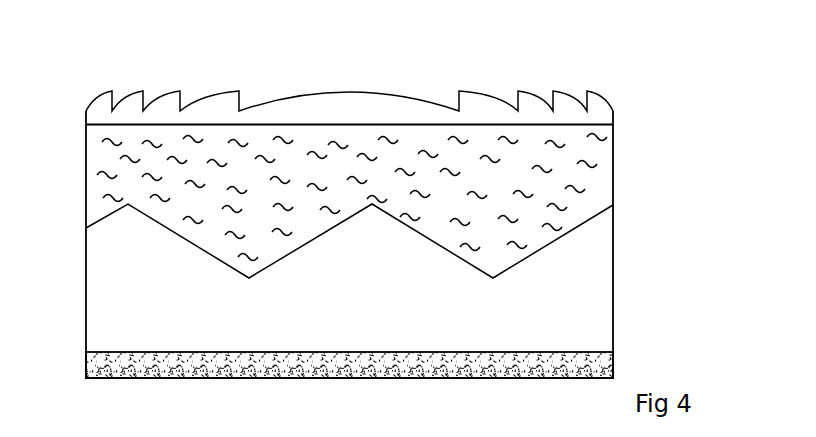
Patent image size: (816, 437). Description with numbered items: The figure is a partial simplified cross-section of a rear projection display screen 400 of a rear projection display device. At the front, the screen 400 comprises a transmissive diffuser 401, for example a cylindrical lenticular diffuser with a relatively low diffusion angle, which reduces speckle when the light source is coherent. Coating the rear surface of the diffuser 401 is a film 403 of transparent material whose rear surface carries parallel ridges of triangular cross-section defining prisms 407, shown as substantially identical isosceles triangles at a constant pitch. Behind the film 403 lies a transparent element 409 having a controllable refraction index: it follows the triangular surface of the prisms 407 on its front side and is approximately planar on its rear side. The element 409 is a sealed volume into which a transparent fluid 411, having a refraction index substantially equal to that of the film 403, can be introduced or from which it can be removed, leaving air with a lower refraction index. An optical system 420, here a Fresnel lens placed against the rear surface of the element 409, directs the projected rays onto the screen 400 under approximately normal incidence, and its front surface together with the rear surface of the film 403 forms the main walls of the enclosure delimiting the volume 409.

The rear projection display screen 400 is at (632, 125).
The transmissive diffuser 401 is at (120, 363).
The film 403 is at (123, 282).
The prisms 407 is at (125, 206).
The transparent element having a controllable refraction index 409 is at (107, 157).
The transparent fluid 411 is at (97, 132).
The optical system 420 is at (327, 92).